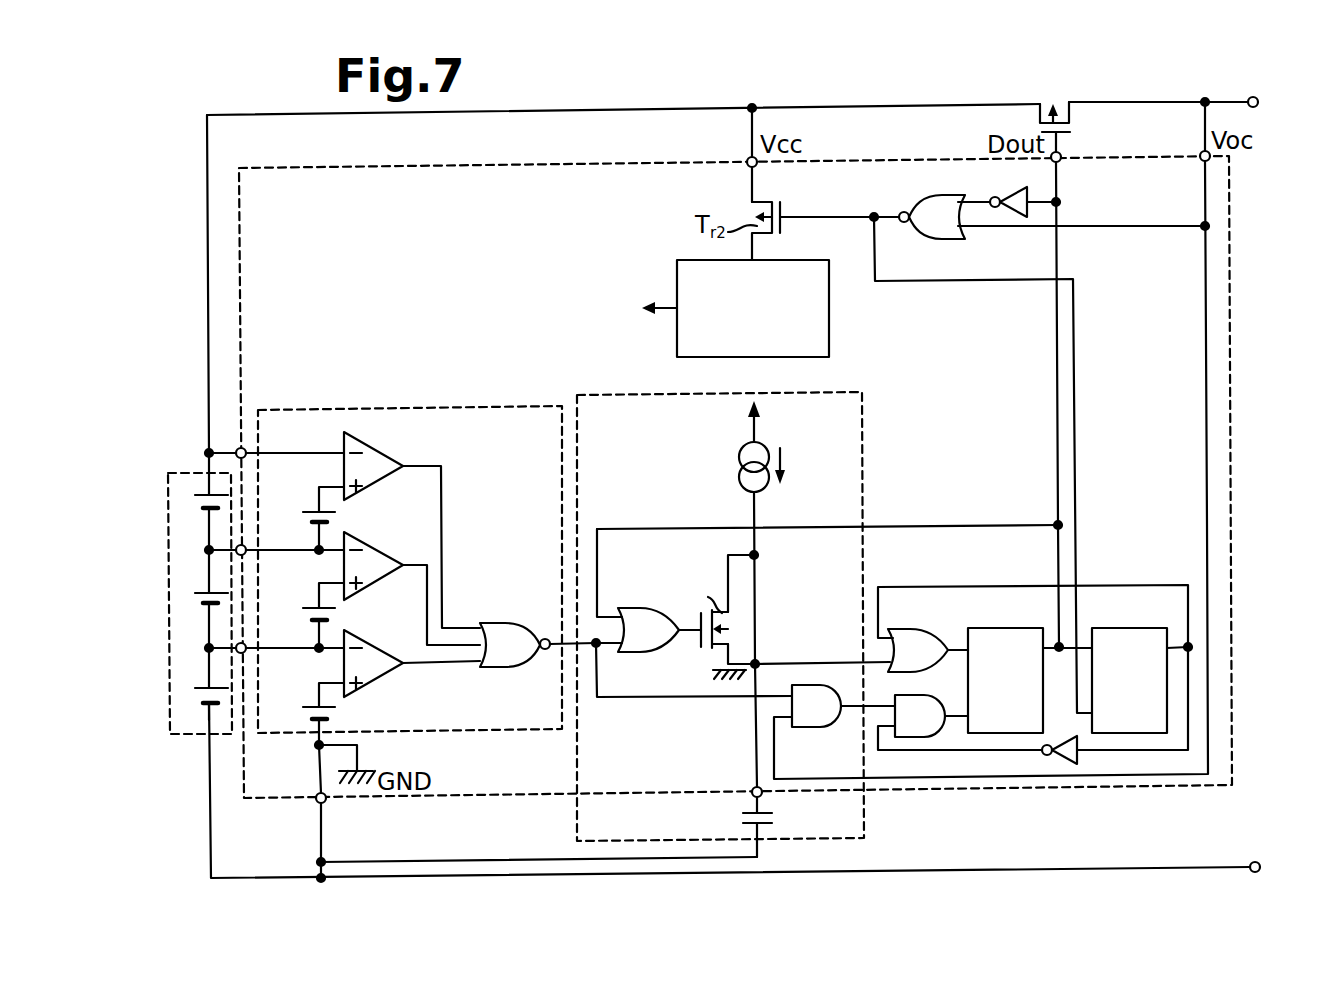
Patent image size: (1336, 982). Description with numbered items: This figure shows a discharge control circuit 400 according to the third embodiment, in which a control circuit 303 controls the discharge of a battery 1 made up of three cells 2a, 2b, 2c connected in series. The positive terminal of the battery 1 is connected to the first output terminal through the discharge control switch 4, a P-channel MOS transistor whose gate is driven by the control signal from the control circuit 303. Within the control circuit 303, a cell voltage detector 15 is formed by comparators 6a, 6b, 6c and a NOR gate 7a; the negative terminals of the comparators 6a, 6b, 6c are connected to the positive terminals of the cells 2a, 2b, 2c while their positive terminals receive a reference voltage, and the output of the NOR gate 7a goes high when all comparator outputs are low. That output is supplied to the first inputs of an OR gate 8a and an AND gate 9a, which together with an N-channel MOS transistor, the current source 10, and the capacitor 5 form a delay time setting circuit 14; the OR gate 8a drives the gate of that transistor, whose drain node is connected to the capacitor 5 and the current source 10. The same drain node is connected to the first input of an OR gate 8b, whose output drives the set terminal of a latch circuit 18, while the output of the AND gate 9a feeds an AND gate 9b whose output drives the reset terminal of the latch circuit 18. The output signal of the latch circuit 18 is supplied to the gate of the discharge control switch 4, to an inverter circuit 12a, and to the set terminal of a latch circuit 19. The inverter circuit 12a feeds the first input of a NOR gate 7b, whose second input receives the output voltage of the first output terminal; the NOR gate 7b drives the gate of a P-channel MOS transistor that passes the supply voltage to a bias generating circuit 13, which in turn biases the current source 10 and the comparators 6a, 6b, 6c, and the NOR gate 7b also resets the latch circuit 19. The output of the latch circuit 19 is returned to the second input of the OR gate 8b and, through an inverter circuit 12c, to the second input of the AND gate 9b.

The battery 1 is at (200, 571).
The cell 2a is at (197, 493).
The cell 2b is at (204, 594).
The cell 2c is at (204, 689).
The discharge control switch 4 is at (1072, 118).
The capacitor 5 is at (768, 810).
The comparator 6a is at (377, 451).
The comparator 6b is at (377, 550).
The comparator 6c is at (377, 648).
The NOR gate 7a is at (516, 622).
The NOR gate 7b is at (936, 238).
The OR gate 8a is at (663, 607).
The OR gate 8b is at (910, 631).
The AND gate 9a is at (812, 728).
The AND gate 9b is at (914, 696).
The current source 10 is at (740, 453).
The inverter circuit 12a is at (1012, 190).
The inverter circuit 12c is at (1060, 765).
The bias generating circuit 13 is at (829, 310).
The delay time setting circuit 14 is at (862, 435).
The cell voltage detector 15 is at (503, 408).
The latch circuit 18 is at (999, 628).
The latch circuit 19 is at (1123, 628).
The control circuit 303 is at (1231, 244).
The discharge control circuit 400 is at (1158, 78).